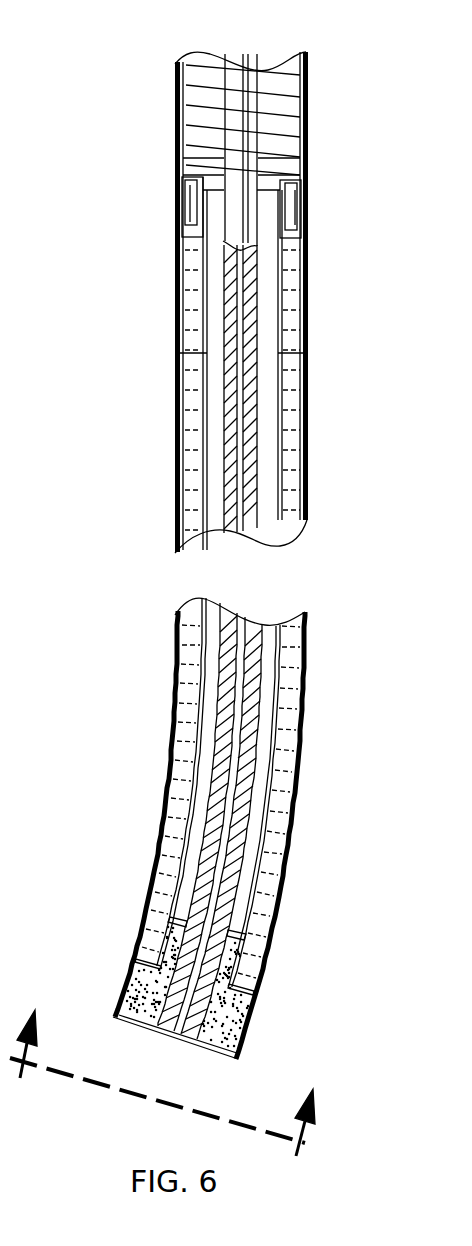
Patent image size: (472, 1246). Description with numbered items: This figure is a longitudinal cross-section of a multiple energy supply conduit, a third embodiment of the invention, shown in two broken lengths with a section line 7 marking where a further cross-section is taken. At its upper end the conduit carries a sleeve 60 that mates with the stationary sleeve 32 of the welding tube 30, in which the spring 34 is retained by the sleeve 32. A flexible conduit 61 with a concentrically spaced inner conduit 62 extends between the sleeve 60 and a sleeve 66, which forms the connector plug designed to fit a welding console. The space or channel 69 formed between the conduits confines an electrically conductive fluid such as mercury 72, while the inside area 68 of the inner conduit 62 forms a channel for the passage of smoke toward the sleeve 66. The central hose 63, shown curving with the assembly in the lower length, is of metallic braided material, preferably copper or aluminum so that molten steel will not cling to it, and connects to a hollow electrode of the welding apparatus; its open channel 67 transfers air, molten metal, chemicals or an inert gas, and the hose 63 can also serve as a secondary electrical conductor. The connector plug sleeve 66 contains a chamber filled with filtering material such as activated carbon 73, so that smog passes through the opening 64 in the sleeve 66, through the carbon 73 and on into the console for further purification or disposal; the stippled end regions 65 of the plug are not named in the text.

The tube 30 is at (308, 150).
The stationary mounted sleeve 32 is at (190, 78).
The spring 34 is at (273, 73).
The sleeve 60 is at (182, 232).
The flexible conduit 61 is at (177, 421).
The inner conduit 62 is at (205, 520).
The hose 63 is at (270, 628).
The opening 64 is at (227, 938).
The potting compound 65 is at (248, 1036).
The sleeve 66 is at (137, 1028).
The open channel 67 is at (173, 1040).
The inside area 68 is at (270, 318).
The channel 69 is at (297, 438).
The mercury 72 is at (298, 495).
The activated carbon 73 is at (130, 988).
The section line 7- 7 is at (169, 1073).